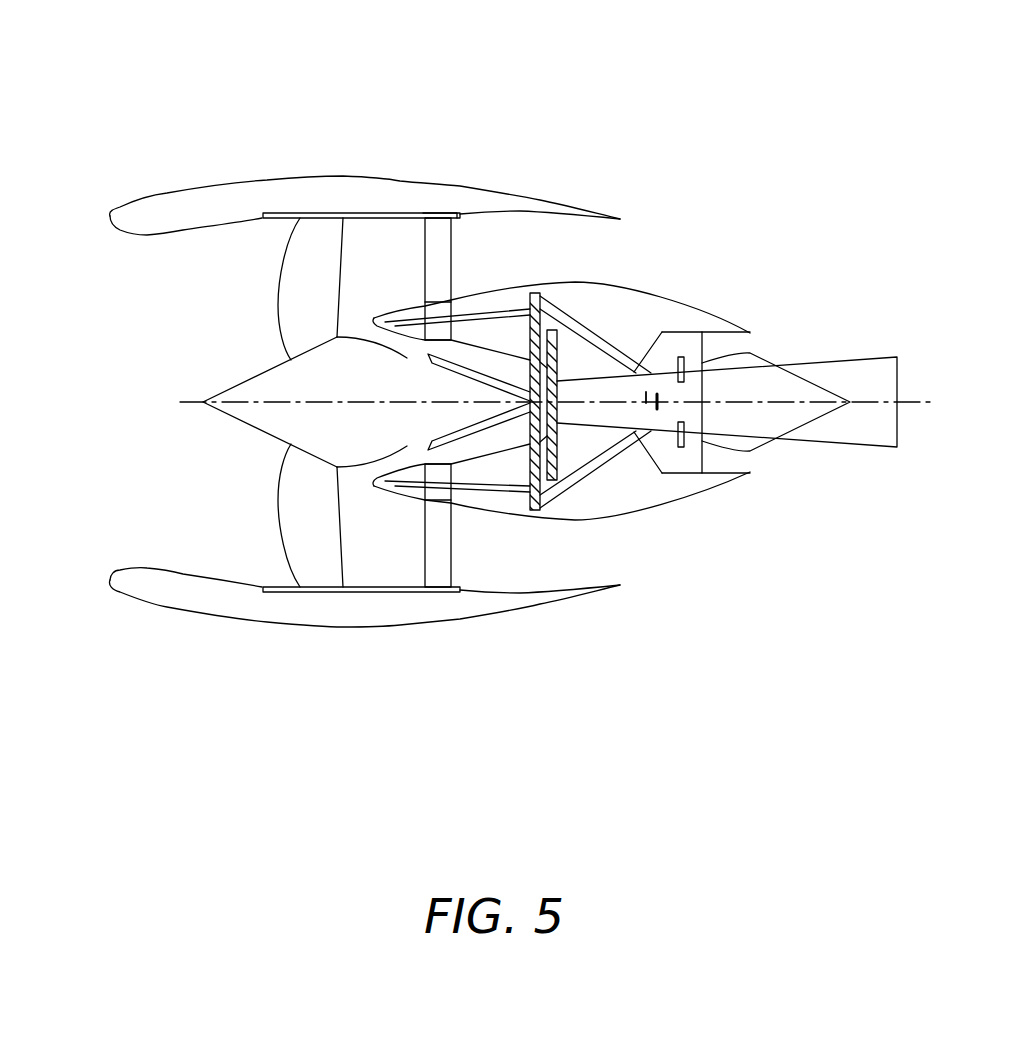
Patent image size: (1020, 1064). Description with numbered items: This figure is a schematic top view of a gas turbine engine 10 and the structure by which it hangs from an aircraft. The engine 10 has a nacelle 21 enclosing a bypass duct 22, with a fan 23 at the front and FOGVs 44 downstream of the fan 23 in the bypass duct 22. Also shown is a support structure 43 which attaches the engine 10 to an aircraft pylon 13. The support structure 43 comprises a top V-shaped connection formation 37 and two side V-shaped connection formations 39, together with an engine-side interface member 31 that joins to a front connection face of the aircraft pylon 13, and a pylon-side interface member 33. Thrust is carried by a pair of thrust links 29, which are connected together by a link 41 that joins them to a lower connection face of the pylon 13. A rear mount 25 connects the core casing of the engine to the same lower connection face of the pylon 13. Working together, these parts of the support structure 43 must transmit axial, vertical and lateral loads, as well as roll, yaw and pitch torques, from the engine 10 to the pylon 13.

The gas turbine engine 10 is at (136, 20).
The aircraft pylon 13 is at (864, 350).
The nacelle 21 is at (293, 194).
The bypass duct 22 is at (531, 259).
The fan 23 is at (293, 527).
The rear mount 25 is at (683, 345).
The thrust links 29 is at (620, 473).
The engine-side interface member 31 is at (534, 520).
The pylon-side interface member 33 is at (580, 341).
The top V-shaped connection formation 37 is at (448, 429).
The side V-shaped connection formations 39 is at (449, 295).
The link 41 is at (676, 408).
The support structure 43 is at (573, 503).
The FOGVs 44 is at (443, 235).